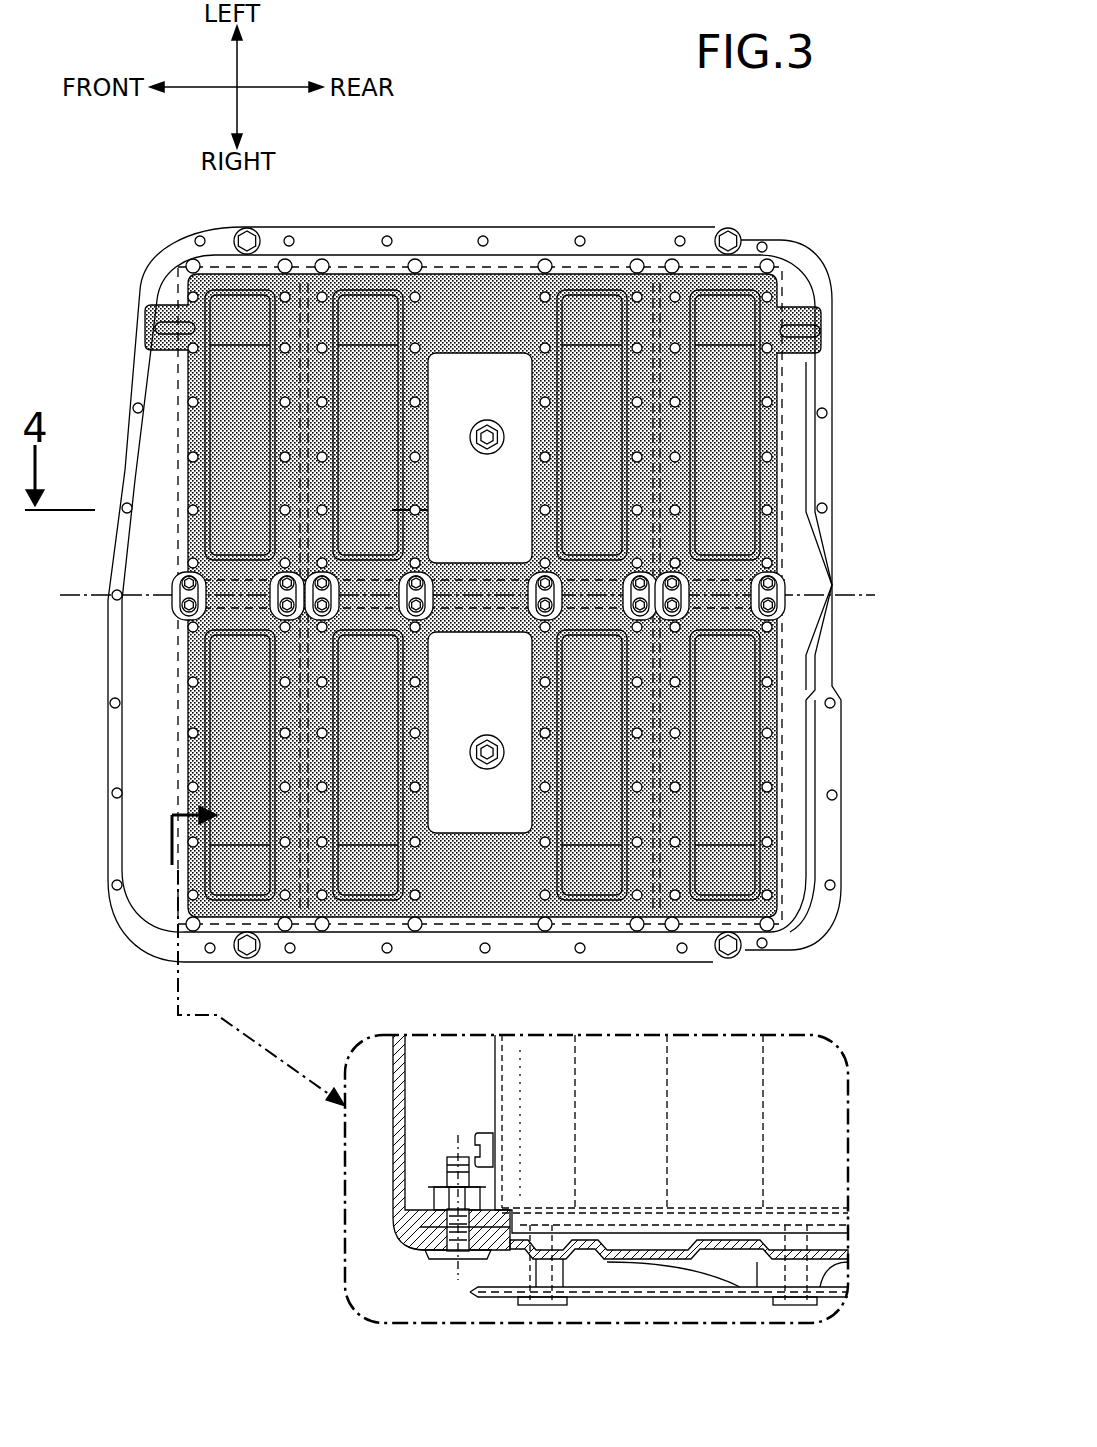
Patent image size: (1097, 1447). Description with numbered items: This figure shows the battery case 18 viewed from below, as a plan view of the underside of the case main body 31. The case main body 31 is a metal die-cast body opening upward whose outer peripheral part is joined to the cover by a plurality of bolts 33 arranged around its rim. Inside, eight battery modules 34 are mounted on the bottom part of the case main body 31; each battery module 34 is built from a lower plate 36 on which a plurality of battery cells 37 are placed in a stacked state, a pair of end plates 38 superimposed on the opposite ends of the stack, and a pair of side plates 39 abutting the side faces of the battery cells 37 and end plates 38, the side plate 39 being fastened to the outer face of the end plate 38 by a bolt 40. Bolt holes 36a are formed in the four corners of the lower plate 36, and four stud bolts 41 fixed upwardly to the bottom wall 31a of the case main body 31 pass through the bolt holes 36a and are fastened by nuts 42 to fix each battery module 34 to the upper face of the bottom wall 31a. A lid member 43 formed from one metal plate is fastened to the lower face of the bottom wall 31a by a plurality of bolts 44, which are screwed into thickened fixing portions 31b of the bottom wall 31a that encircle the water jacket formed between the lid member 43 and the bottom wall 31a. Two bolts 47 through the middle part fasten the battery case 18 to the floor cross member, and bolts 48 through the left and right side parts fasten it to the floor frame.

The battery case 18 is at (550, 163).
The case main body 31 is at (439, 220).
The bottom wall 31a is at (135, 665).
The fixing portions 31b is at (560, 1262).
The bolts 33 is at (387, 236).
The battery modules 34 is at (360, 256).
The lower plate 36 is at (405, 1216).
The bolt holes 36a is at (420, 1243).
The battery cells 37 is at (637, 1052).
The end plates 38 is at (528, 1058).
The side plates 39 is at (493, 1092).
The bolt 40 is at (477, 1145).
The stud bolts 41 is at (540, 262).
The nuts 42 is at (437, 1190).
The lid member 43 is at (220, 530).
The bolts 44 is at (283, 353).
The bolts 47 is at (488, 455).
The bolts 48 is at (243, 232).